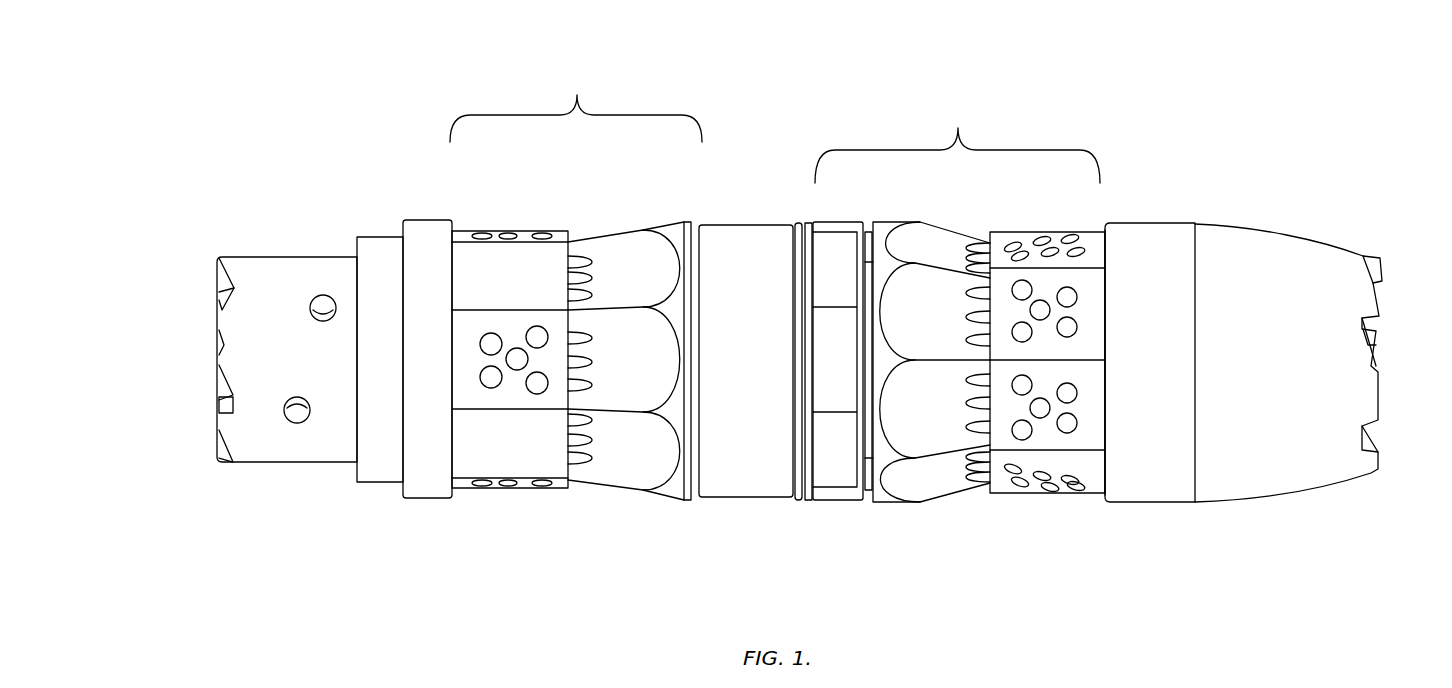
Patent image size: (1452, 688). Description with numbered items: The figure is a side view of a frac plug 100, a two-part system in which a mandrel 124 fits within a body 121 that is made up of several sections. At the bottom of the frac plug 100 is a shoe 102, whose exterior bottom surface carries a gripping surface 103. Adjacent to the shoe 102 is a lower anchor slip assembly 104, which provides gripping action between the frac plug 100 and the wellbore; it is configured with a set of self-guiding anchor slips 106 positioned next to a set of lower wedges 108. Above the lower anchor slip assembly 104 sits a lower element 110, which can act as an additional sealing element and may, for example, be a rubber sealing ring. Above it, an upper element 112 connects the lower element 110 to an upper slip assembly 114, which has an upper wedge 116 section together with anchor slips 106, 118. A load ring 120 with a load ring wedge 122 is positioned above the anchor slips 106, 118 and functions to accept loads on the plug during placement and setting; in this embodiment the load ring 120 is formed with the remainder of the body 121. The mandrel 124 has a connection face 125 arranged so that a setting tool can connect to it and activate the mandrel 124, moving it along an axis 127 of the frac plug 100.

The frac plug 100 is at (356, 90).
The shoe 102 is at (1325, 240).
The gripping surface 103 is at (1383, 305).
The lower anchor slip assembly 104 is at (957, 141).
The self-guiding anchor slips 106 is at (1093, 293).
The lower wedges 108 is at (928, 425).
The lower element 110 is at (808, 222).
The upper element 112 is at (753, 222).
The upper slip assembly 114 is at (576, 102).
The upper wedge 116 is at (647, 232).
The anchor slips 118 is at (471, 458).
The load ring 120 is at (417, 220).
The body 121 is at (1164, 180).
The load ring wedge 122 is at (380, 237).
The mandrel 124 is at (280, 256).
The connection face 125 is at (217, 285).
The axis 127 is at (206, 373).